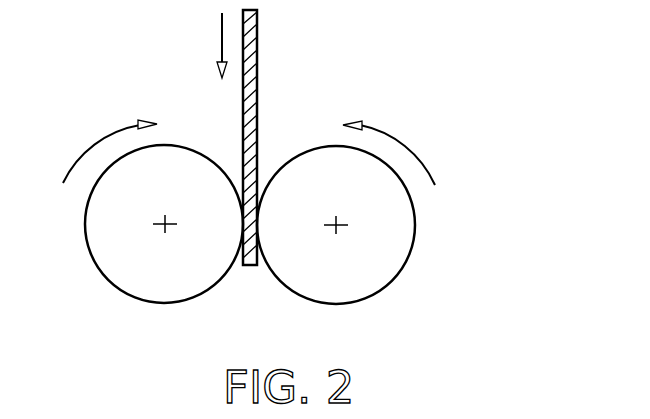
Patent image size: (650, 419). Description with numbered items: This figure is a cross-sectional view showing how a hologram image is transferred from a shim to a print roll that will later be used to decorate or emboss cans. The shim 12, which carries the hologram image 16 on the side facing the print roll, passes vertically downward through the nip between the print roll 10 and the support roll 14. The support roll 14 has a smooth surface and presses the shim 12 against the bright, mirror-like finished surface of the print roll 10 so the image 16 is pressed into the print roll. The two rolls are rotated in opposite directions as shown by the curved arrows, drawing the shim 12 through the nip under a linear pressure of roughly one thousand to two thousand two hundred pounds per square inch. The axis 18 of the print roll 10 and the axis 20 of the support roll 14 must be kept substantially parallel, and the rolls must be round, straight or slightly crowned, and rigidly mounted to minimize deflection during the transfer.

The print roll 10 is at (418, 245).
The shim 12 is at (258, 63).
The support roll 14 is at (203, 295).
The image 16 is at (258, 113).
The axis of the print roll 18 is at (342, 232).
The axis of the support roll 20 is at (155, 230).